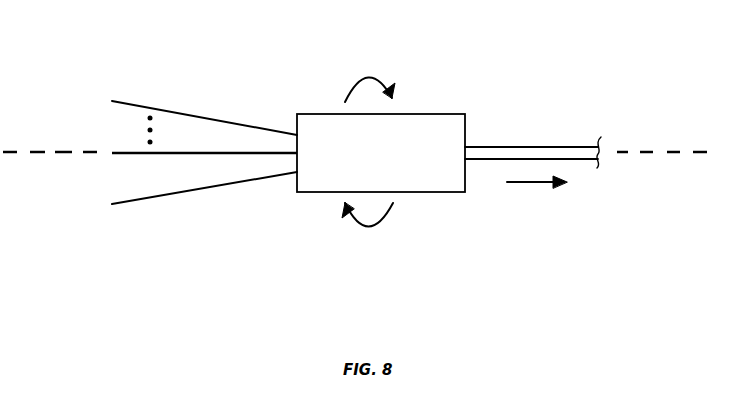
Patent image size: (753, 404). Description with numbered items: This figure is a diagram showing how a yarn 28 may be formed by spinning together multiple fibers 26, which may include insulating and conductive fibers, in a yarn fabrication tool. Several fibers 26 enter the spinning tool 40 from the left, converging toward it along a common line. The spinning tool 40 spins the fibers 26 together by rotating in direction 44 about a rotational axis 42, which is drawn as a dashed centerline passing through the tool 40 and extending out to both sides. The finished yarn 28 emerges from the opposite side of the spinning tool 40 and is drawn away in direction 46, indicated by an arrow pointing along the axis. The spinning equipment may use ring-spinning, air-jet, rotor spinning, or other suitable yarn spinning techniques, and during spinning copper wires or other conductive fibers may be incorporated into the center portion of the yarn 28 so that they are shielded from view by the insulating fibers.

The fibers 26 is at (183, 110).
The yarn 28 is at (539, 112).
The spinning tool 40 is at (427, 193).
The rotational axis 42 is at (38, 151).
The direction 44 is at (367, 74).
The direction 46 is at (540, 186).